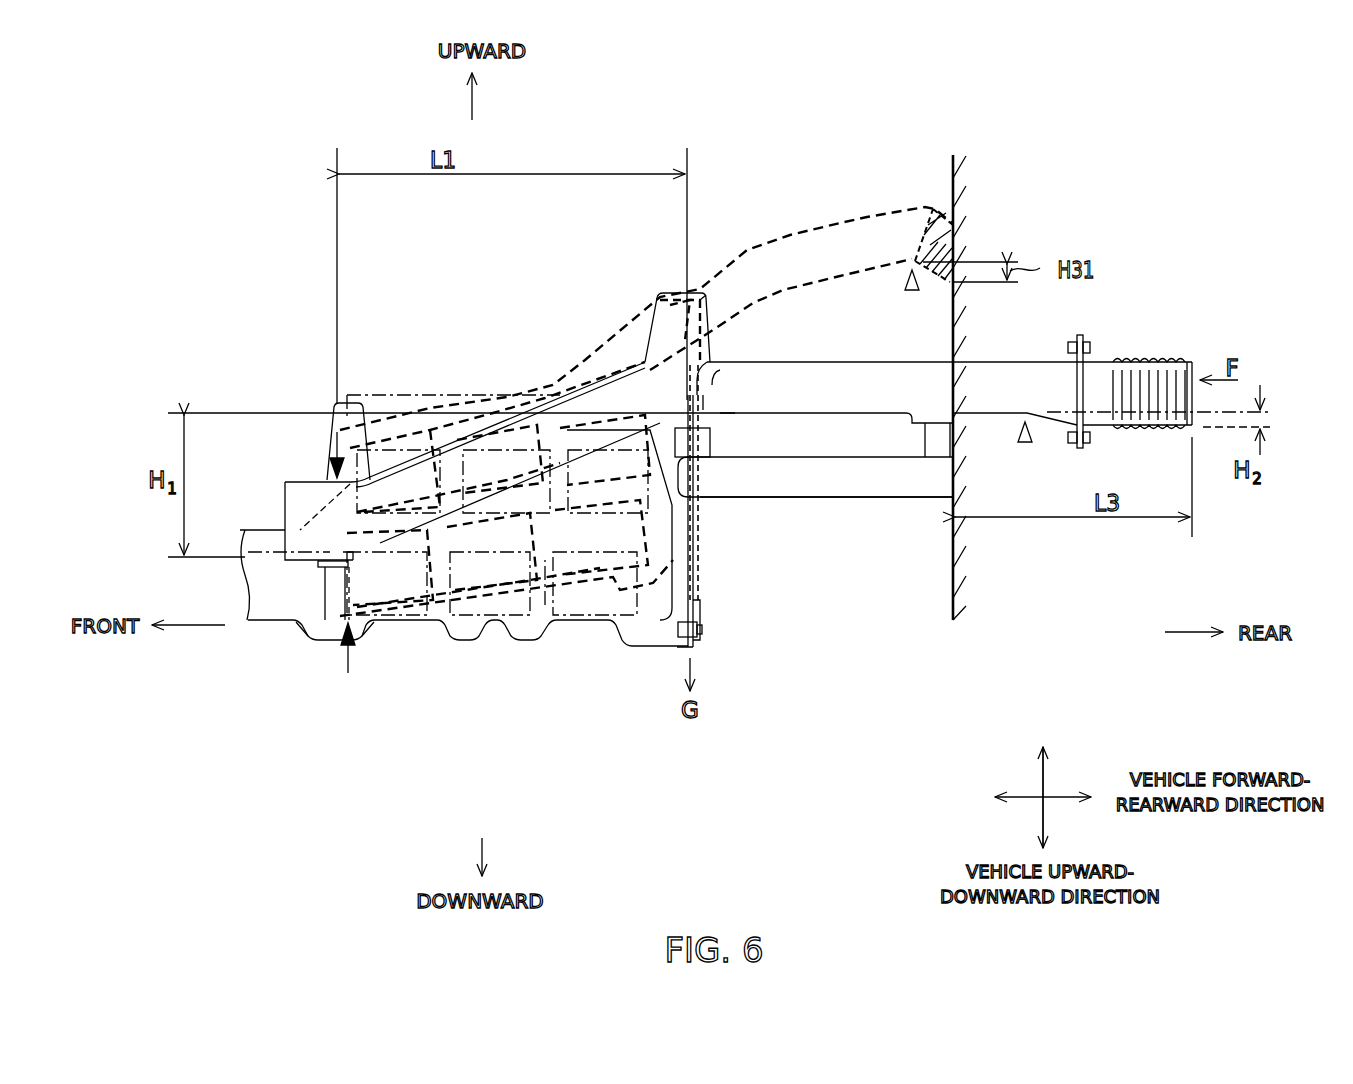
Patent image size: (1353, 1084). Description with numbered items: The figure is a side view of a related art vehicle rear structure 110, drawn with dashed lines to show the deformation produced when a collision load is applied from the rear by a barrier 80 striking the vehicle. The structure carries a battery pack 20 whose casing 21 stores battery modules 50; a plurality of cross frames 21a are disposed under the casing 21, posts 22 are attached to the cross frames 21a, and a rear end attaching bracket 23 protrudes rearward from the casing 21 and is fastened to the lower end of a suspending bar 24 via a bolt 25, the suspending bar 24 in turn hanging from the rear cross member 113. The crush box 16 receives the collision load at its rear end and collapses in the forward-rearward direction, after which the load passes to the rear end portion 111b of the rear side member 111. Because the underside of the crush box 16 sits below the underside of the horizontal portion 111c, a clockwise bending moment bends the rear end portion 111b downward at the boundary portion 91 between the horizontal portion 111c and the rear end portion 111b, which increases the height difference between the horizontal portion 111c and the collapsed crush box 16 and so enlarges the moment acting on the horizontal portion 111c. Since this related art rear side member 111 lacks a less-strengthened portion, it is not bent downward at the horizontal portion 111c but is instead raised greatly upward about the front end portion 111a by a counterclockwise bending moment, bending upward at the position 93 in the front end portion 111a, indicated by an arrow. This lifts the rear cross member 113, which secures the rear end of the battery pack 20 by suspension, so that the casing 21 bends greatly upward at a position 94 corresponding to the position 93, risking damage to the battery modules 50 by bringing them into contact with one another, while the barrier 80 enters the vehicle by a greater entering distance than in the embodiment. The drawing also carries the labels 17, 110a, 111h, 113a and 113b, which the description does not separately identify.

The crush box 16 is at (957, 243).
The cross member 17 is at (861, 499).
The battery pack 20 is at (572, 625).
The casing 21 is at (415, 624).
The cross frames 21a is at (318, 645).
The posts 22 is at (296, 606).
The rear end attaching bracket 23 is at (665, 650).
The suspending bar 24 is at (701, 632).
The bolt 25 is at (699, 637).
The battery modules 50 is at (545, 605).
The barrier 80 is at (953, 577).
The boundary portion 91 is at (910, 290).
The position 93 is at (328, 474).
The position 94 is at (321, 645).
The related art vehicle rear structure 110 is at (1131, 247).
The lower edge of battery pack 110a is at (360, 530).
The rear side member 111 is at (803, 232).
The front end portion 111a is at (390, 395).
The rear end portion 111b is at (918, 232).
The horizontal portion 111c is at (805, 421).
The bracket hook portion 111h is at (701, 393).
The rear cross member 113 is at (652, 302).
The mounting bracket upper portion 113a is at (672, 292).
The mounting bracket rear portion 113b is at (704, 284).